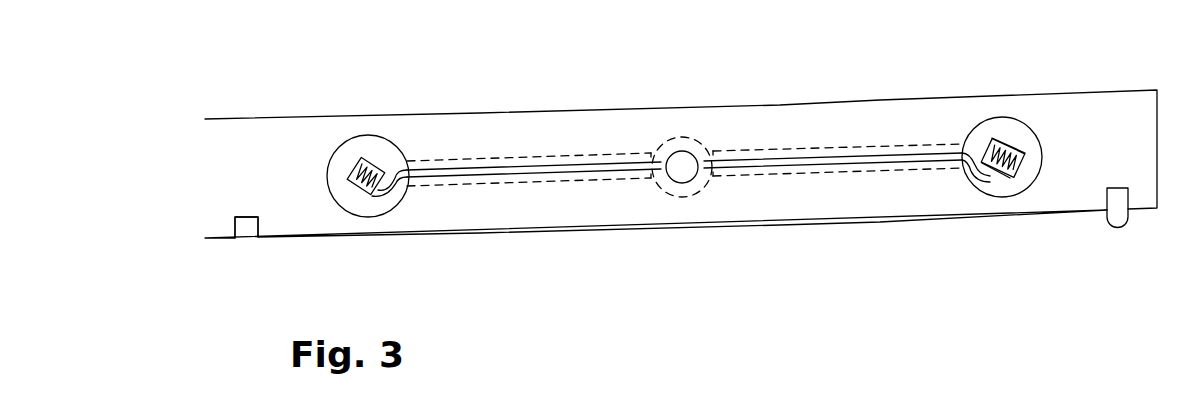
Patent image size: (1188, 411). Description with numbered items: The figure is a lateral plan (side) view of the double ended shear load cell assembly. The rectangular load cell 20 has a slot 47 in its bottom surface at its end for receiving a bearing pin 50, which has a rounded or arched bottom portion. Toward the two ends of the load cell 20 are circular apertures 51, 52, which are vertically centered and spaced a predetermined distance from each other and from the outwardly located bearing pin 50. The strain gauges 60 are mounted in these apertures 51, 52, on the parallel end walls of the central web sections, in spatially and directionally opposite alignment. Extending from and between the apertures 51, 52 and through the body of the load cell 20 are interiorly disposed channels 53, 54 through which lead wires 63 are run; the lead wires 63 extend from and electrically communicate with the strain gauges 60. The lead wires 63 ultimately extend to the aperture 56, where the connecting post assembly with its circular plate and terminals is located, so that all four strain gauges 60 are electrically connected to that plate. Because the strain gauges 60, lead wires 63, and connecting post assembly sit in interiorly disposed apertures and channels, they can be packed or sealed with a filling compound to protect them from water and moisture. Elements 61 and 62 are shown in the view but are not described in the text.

The load cell 20 is at (919, 117).
The slot 47 is at (247, 233).
The bearing pin 50 is at (1125, 212).
The circular aperture 51 is at (375, 158).
The circular aperture 52 is at (1012, 180).
The channel 53 is at (582, 178).
The channel 54 is at (882, 168).
The aperture 56 is at (691, 170).
The strain gauge 60 is at (1018, 132).
The lead 61 is at (1002, 137).
The lead 62 is at (1012, 165).
The lead wires 63 is at (971, 185).